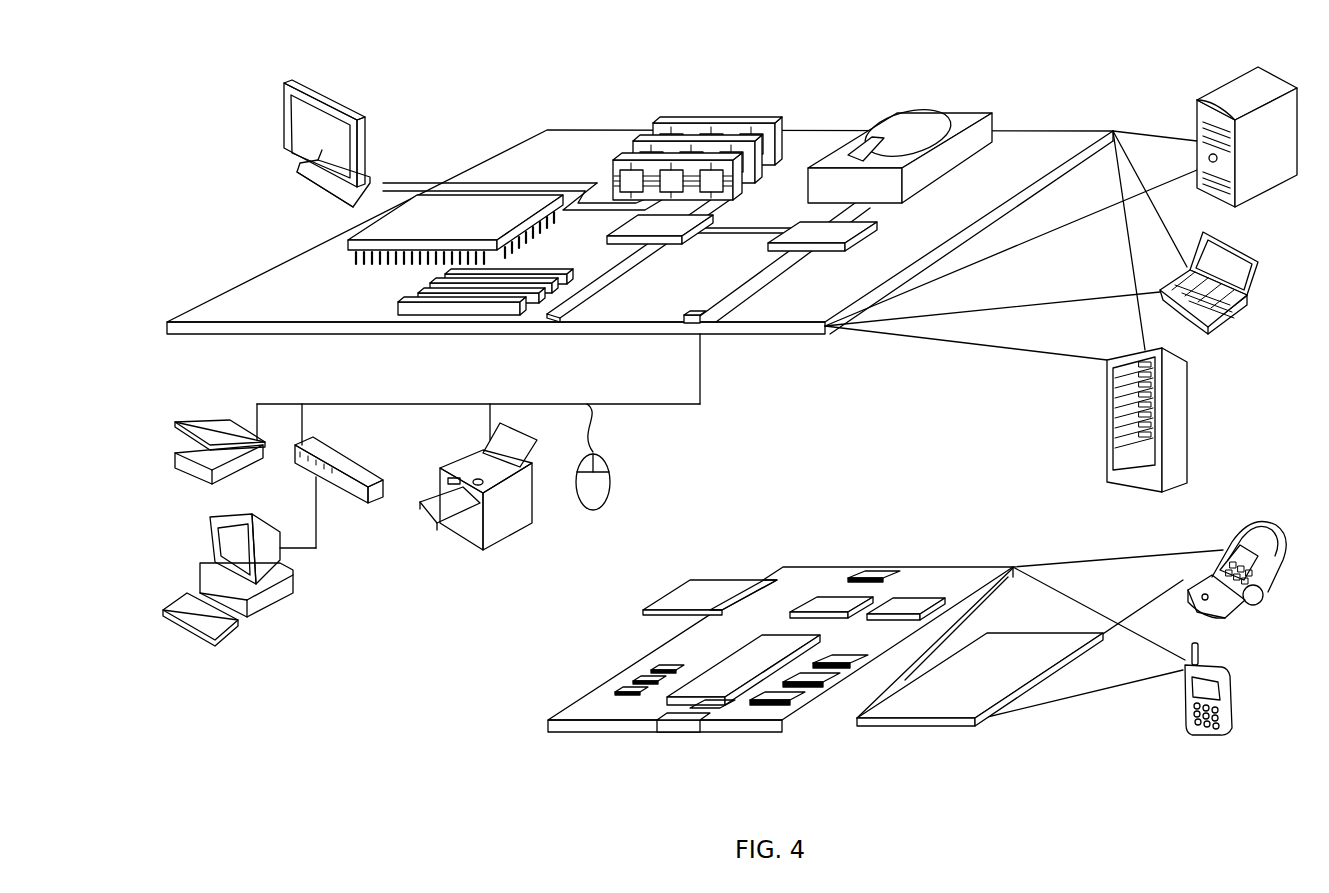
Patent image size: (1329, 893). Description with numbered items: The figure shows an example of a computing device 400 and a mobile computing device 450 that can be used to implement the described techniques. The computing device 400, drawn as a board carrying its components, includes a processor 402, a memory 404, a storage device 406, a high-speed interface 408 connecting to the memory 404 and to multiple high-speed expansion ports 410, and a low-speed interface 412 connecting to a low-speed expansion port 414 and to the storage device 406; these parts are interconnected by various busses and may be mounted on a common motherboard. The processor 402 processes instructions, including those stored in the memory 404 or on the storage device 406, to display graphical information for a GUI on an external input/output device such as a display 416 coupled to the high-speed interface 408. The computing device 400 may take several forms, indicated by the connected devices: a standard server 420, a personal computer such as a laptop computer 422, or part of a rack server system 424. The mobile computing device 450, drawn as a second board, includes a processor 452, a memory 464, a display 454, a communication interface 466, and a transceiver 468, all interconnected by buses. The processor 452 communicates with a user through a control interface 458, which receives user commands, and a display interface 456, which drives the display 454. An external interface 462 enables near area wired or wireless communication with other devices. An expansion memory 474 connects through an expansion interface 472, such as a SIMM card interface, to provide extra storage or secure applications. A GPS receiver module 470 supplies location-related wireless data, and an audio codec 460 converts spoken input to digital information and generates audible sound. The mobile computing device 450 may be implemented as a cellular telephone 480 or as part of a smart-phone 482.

The computing device 400 is at (470, 103).
The processor 402 is at (350, 241).
The memory 404 is at (664, 124).
The storage device 406 is at (893, 113).
The high-speed interface 408 is at (640, 232).
The high-speed expansion ports 410 is at (418, 298).
The low-speed interface 412 is at (808, 230).
The low-speed expansion port 414 is at (703, 326).
The display 416 is at (286, 83).
The standard server 420 is at (1195, 118).
The laptop computer 422 is at (1240, 252).
The rack server system 424 is at (1107, 440).
The mobile computing device 450 is at (524, 737).
The processor 452 is at (716, 690).
The display 454 is at (943, 708).
The display interface 456 is at (782, 705).
The control interface 458 is at (810, 687).
The audio codec 460 is at (840, 668).
The external interface 462 is at (683, 733).
The memory 464 is at (628, 692).
The communication interface 466 is at (835, 600).
The transceiver 468 is at (905, 600).
The GPS receiver module 470 is at (880, 572).
The expansion interface 472 is at (762, 578).
The expansion memory 474 is at (690, 582).
The cellular telephone 480 is at (1242, 526).
The smart-phone 482 is at (1185, 697).